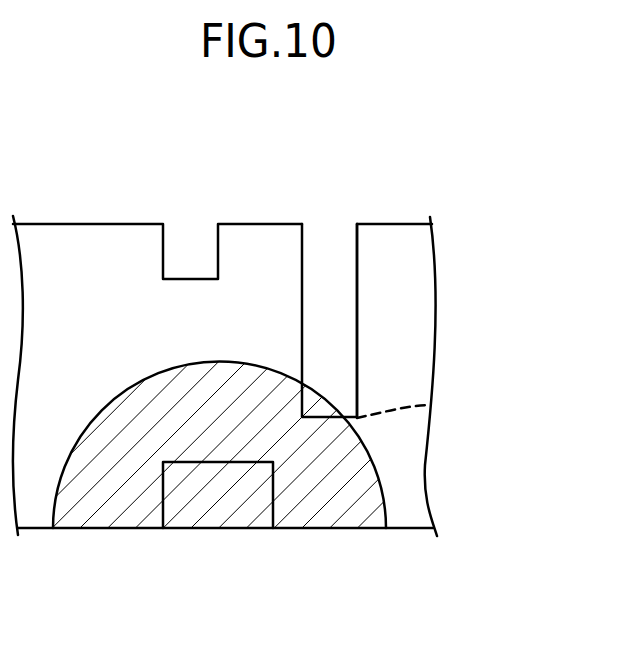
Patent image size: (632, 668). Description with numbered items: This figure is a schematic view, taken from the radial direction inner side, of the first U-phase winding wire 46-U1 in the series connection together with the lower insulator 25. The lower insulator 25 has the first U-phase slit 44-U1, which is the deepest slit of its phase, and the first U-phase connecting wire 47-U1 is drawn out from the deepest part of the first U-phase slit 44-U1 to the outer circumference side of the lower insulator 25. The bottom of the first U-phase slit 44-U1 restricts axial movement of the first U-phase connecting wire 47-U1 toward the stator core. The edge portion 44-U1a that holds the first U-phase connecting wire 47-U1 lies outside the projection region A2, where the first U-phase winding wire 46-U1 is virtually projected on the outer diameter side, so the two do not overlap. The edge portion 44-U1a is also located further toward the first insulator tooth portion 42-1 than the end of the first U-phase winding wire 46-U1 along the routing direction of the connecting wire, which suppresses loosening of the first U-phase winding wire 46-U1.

The lower insulator 25 is at (418, 263).
The first U-phase slit 44-U1 is at (320, 214).
The edge portion 44-U1a is at (357, 247).
The first U-phase connecting wire 47-U1 is at (403, 405).
The first U-phase winding wire 46-U1 is at (382, 497).
The first insulator tooth portion 42-1 is at (164, 490).
The projection region A2 is at (104, 520).